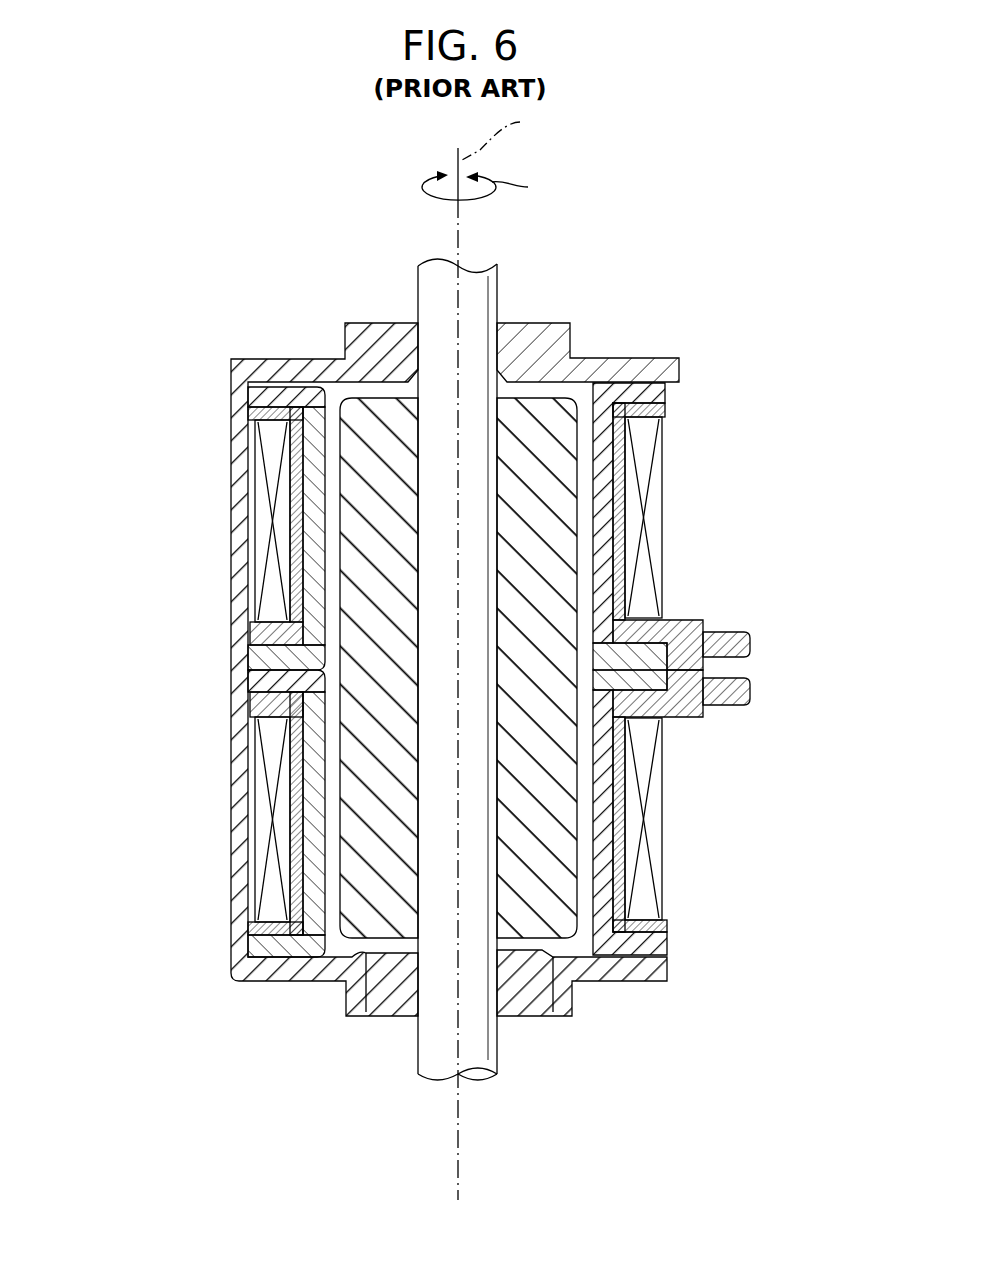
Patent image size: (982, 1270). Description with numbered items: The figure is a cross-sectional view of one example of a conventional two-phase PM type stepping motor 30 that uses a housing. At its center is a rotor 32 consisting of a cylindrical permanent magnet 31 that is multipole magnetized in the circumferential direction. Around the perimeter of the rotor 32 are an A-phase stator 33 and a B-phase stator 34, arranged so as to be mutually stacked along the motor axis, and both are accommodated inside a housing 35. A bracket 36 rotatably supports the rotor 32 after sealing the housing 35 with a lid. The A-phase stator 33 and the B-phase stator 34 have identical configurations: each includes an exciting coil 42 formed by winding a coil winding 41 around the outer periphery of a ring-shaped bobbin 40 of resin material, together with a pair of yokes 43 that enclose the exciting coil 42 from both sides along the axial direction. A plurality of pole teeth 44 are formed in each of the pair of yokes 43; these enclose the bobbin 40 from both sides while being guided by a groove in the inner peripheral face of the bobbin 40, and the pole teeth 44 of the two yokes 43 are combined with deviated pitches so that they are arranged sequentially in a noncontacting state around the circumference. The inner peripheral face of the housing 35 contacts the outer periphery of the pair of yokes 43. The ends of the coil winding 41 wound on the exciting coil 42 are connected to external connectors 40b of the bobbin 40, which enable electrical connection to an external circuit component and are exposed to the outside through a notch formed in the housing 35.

The two-phase PM type stepping motor 30 is at (707, 243).
The cylindrical permanent magnet 31 is at (574, 398).
The rotor 32 is at (401, 286).
The A-phase stator 33 is at (100, 413).
The B-phase stator 34 is at (82, 790).
The housing 35 is at (243, 972).
The bracket 36 is at (655, 370).
The bobbin 40 is at (695, 618).
The external connectors 40b is at (755, 645).
The coil winding 41 is at (653, 507).
The exciting coil 42 is at (241, 465).
The yokes 43 is at (240, 395).
The pole teeth 44 is at (317, 578).